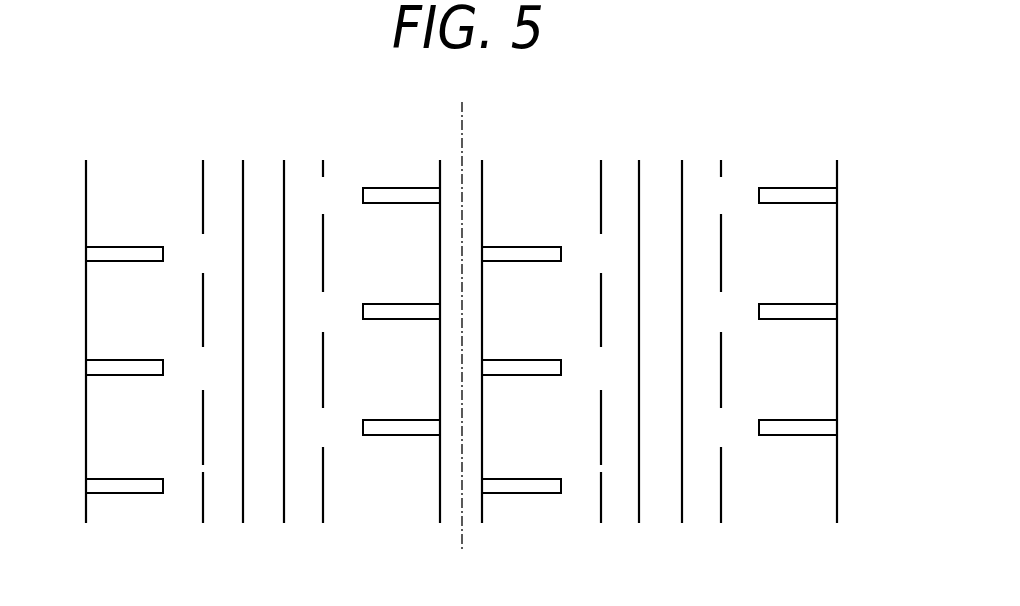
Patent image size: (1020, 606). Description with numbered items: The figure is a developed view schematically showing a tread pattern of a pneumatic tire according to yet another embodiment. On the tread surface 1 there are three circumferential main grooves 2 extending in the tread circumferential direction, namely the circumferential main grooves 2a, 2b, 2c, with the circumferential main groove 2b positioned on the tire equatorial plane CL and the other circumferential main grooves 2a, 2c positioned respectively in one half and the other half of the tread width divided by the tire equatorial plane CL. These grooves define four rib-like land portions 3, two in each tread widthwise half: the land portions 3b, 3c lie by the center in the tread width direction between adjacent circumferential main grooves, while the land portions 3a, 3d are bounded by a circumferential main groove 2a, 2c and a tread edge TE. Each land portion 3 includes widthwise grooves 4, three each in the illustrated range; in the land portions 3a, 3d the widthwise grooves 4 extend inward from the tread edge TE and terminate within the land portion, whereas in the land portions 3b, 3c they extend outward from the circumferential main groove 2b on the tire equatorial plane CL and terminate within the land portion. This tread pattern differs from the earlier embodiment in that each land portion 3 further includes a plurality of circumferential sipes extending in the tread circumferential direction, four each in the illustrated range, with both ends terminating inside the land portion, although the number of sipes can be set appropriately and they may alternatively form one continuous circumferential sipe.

The tread surface 1 is at (735, 98).
The circumferential main grooves 2 is at (469, 344).
The circumferential main groove 2a is at (264, 502).
The circumferential main groove 2b is at (471, 170).
The circumferential main groove 2c is at (661, 502).
The land portions 3 is at (472, 363).
The land portion 3a is at (198, 363).
The land portion 3b is at (355, 365).
The land portion 3c is at (596, 363).
The land portion 3d is at (752, 365).
The widthwise grooves 4 is at (127, 254).
The tread edge TE is at (86, 318).
The tire equatorial plane CL is at (463, 311).